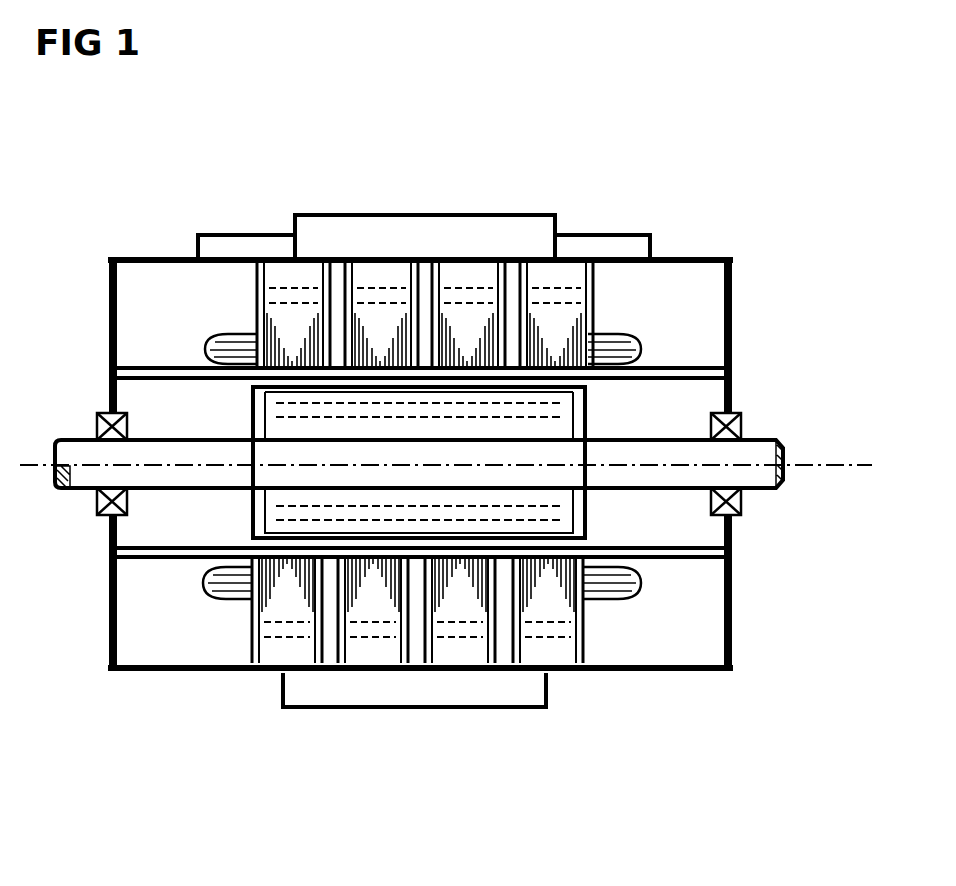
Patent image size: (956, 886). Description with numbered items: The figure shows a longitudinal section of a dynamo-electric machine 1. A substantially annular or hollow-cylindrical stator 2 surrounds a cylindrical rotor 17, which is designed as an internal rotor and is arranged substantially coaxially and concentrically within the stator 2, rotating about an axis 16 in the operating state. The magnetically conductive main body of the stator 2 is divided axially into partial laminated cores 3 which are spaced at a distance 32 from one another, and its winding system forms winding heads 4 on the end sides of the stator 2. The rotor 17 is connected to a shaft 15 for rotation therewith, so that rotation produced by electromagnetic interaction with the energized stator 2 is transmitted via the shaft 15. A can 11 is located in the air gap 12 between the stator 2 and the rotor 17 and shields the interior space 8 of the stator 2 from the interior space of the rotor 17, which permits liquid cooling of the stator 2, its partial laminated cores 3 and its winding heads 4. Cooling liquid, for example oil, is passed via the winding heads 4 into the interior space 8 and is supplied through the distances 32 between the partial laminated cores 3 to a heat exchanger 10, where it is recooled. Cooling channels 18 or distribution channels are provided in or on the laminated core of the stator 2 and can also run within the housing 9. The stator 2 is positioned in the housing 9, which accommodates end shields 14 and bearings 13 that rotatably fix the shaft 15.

The dynamo-electric machine 1 is at (743, 170).
The stator 2 is at (272, 274).
The partial laminated cores 3 is at (366, 268).
The winding heads 4 is at (205, 350).
The interior space 8 is at (178, 270).
The housing 9 is at (700, 256).
The heat exchanger 10 is at (520, 220).
The can 11 is at (735, 368).
The air gap 12 is at (583, 380).
The bearings 13 is at (97, 426).
The end shields 14 is at (106, 311).
The shaft 15 is at (745, 495).
The axis 16 is at (855, 464).
The rotor 17 is at (253, 496).
The cooling channels 18 is at (553, 290).
The distance 32 is at (328, 652).